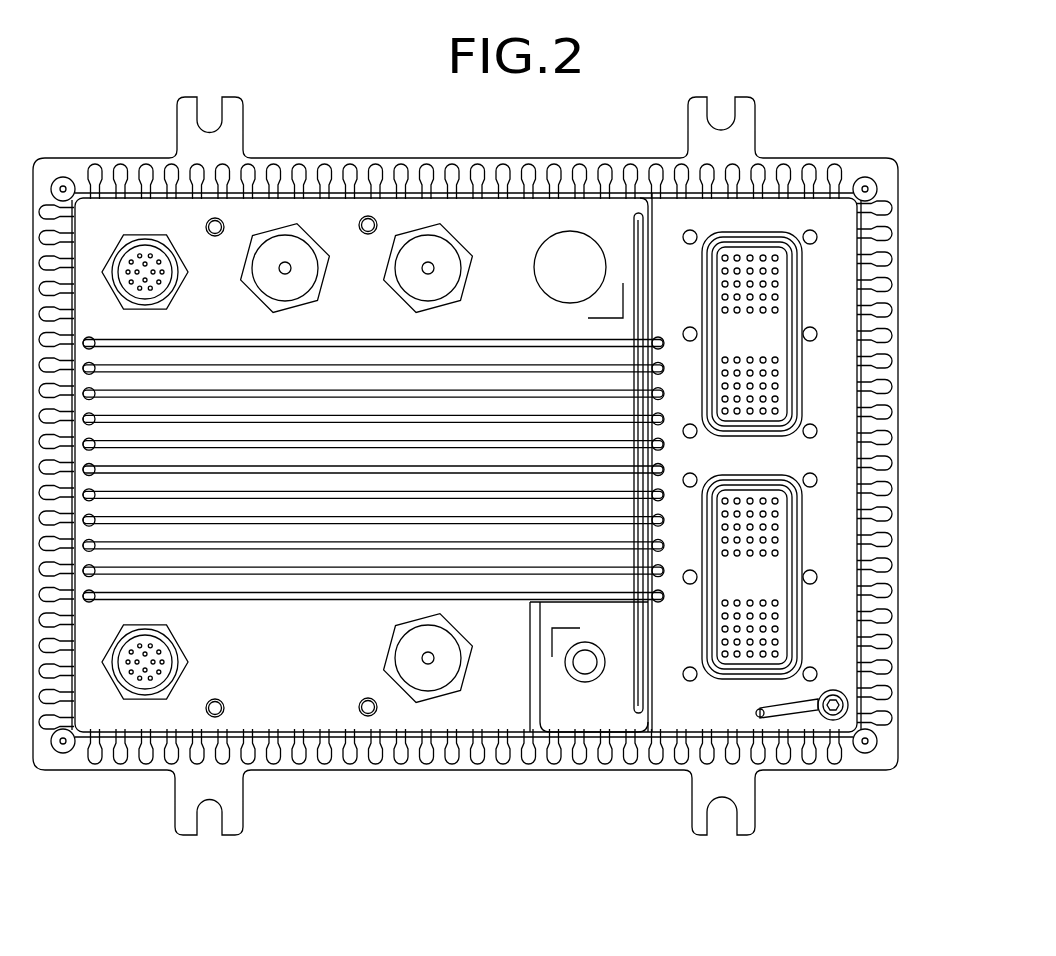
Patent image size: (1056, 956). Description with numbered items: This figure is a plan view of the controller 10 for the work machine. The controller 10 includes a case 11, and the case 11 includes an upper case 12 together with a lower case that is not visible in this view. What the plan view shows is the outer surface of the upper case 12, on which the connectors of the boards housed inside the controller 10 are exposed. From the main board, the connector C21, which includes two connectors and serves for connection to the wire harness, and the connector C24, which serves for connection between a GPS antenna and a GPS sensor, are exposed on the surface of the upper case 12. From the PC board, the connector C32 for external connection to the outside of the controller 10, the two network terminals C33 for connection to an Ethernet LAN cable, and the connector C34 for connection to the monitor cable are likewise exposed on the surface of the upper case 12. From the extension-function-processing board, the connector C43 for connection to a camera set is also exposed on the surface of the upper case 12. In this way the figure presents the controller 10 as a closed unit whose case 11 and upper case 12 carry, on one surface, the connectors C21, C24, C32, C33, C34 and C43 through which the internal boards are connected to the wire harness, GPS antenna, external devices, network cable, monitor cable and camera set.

The controller 10 is at (937, 124).
The case 11 is at (864, 170).
The upper case 12 is at (893, 246).
The connector C43 is at (145, 262).
The network terminal C33 is at (428, 265).
The connector C34 is at (140, 672).
The connector C32 is at (432, 675).
The connector C24 is at (582, 668).
The connector C21 is at (775, 568).